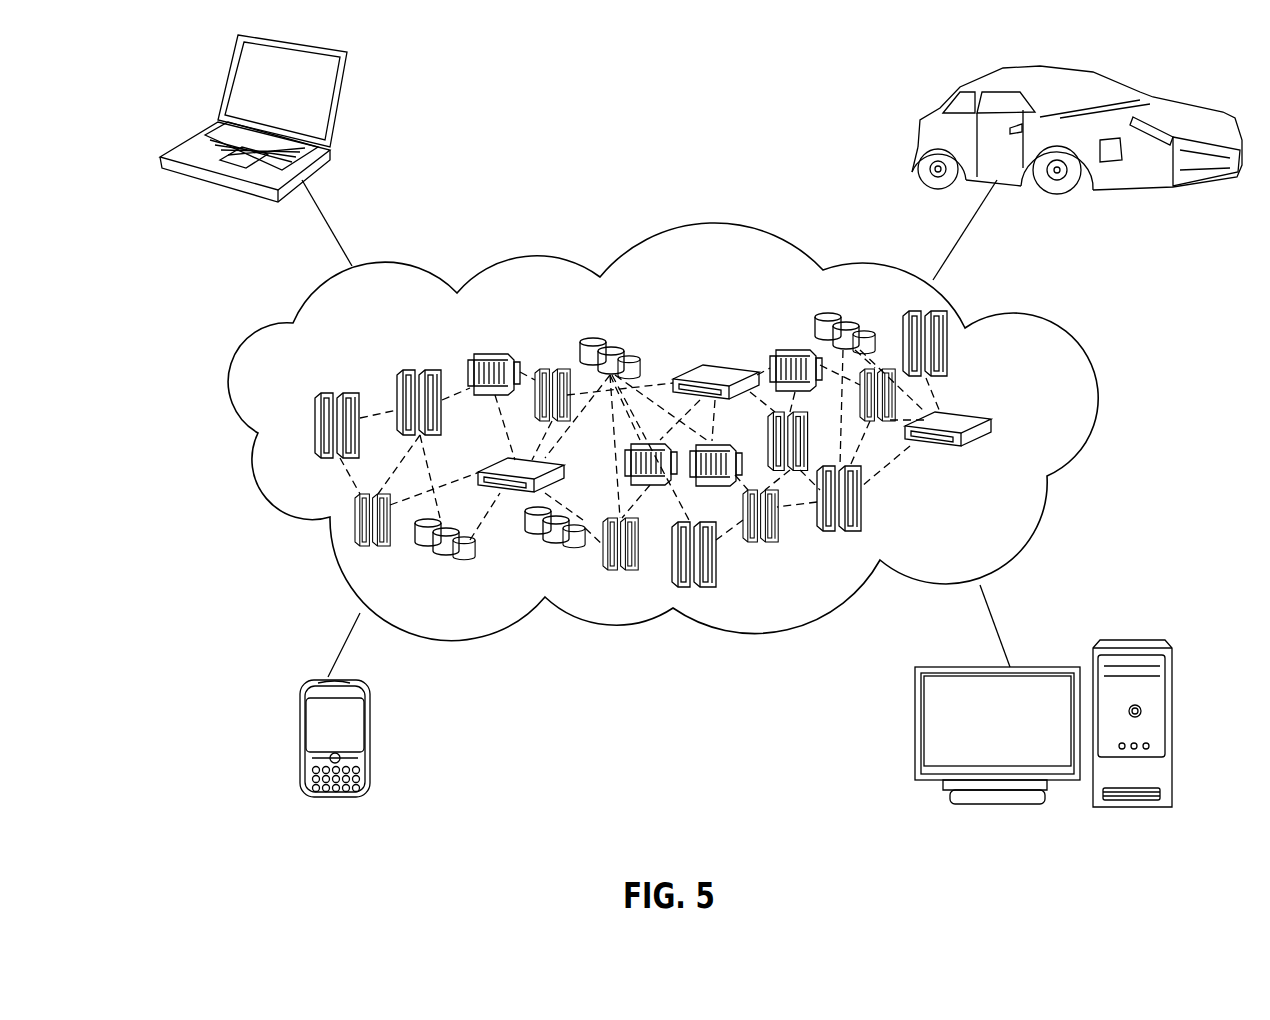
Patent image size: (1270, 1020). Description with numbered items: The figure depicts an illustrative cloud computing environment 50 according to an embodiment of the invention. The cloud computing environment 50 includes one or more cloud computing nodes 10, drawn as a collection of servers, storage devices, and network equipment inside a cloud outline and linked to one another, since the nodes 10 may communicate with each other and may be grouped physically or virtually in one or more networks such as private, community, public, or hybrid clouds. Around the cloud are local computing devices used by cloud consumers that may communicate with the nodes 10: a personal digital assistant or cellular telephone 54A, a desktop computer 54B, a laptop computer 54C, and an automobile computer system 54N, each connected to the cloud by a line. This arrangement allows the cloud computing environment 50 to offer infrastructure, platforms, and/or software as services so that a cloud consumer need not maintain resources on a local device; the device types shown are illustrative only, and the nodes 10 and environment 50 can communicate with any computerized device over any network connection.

The cloud computing nodes 10 is at (1040, 428).
The cloud computing environment 50 is at (1053, 340).
The personal digital assistant (PDA) or cellular telephone 54A is at (300, 740).
The desktop computer 54B is at (1137, 640).
The laptop computer 54C is at (339, 105).
The automobile computer system 54N is at (928, 113).